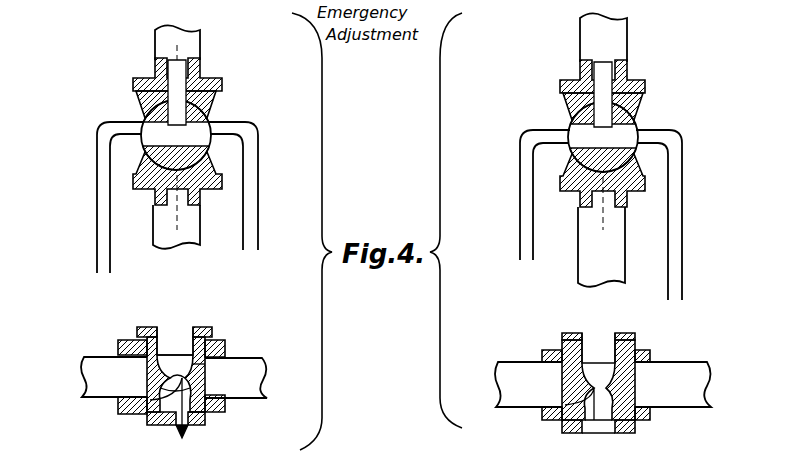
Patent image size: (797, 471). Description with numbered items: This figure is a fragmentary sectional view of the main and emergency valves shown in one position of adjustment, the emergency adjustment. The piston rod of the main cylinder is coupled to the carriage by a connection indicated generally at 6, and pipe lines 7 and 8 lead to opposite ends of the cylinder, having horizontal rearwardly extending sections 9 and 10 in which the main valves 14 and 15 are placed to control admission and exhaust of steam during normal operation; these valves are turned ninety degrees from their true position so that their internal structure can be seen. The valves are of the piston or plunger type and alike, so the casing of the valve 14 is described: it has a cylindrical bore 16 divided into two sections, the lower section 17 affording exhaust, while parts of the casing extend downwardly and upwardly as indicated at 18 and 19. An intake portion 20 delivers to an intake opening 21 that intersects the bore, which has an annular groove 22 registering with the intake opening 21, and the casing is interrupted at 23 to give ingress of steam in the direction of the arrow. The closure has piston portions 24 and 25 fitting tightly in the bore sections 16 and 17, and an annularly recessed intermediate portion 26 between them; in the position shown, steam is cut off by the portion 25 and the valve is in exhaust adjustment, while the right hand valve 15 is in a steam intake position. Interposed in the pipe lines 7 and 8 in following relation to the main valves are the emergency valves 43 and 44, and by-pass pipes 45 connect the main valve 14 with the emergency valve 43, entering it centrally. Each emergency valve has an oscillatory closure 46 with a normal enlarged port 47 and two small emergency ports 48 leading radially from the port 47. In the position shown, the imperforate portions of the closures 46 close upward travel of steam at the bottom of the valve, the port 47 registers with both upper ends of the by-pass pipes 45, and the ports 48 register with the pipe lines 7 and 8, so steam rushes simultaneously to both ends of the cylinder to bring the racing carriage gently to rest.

The coupling 6 is at (176, 136).
The pipe line 7 is at (192, 54).
The pipe line 8 is at (622, 52).
The horizontal rearwardly extending section 9 is at (82, 392).
The horizontal rearwardly extending section 10 is at (521, 370).
The main valve 14 is at (157, 402).
The main valve 15 is at (558, 420).
The cylindrical bore 16 is at (182, 335).
The lower section of bore 17 is at (193, 424).
The downwardly extending casing part 18 is at (142, 362).
The upwardly extending casing part 19 is at (225, 400).
The intake portion 20 is at (190, 370).
The intake opening 21 is at (205, 374).
The annular groove 22 is at (147, 372).
The casing interruption 23 is at (150, 415).
The piston portion 24 is at (180, 352).
The piston portion 25 is at (181, 440).
The annularly recessed intermediate portion 26 is at (185, 364).
The emergency valve 43 is at (140, 110).
The emergency valve 44 is at (566, 112).
The by-pass pipe 45 is at (102, 243).
The oscillatory valve closure 46 is at (572, 164).
The main port 47 is at (196, 130).
The emergency port 48 is at (142, 128).